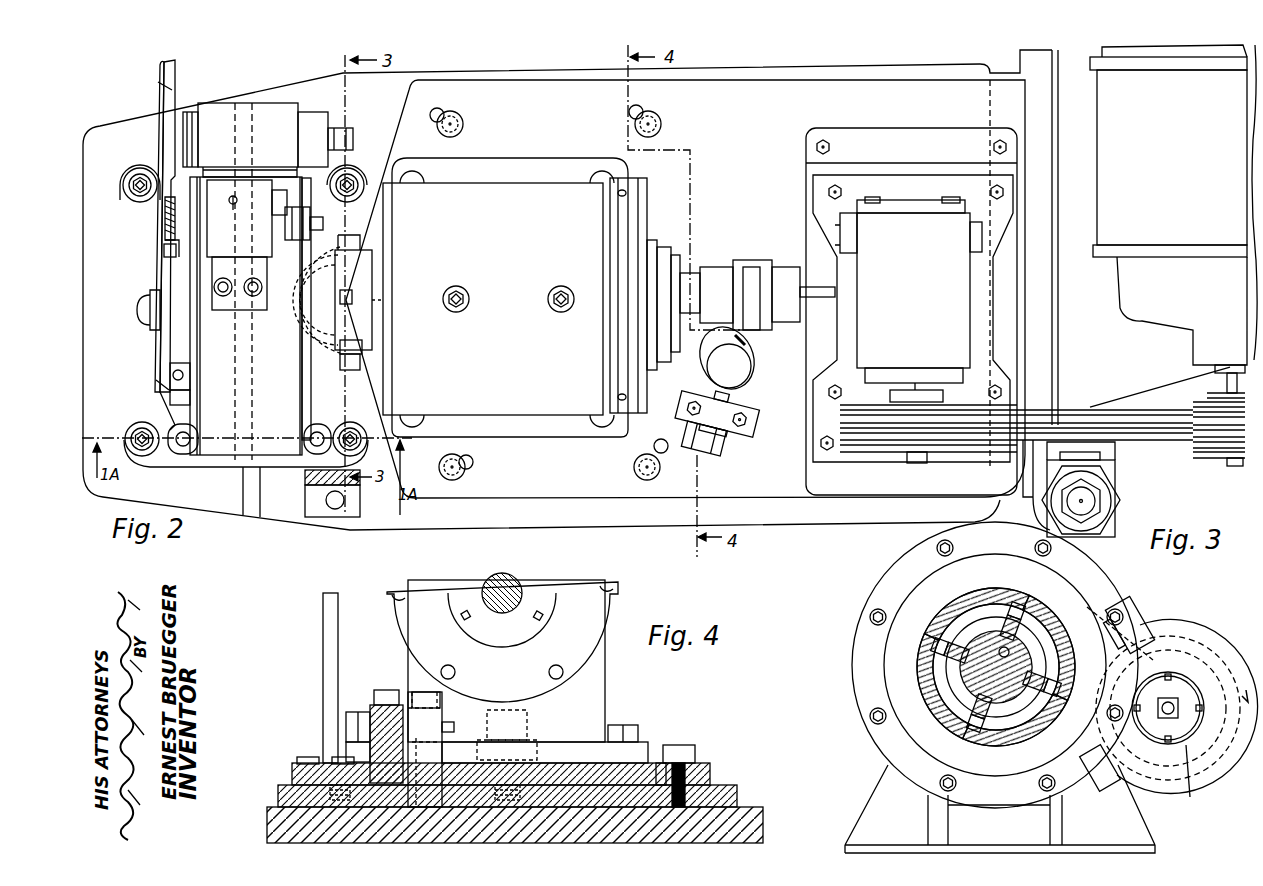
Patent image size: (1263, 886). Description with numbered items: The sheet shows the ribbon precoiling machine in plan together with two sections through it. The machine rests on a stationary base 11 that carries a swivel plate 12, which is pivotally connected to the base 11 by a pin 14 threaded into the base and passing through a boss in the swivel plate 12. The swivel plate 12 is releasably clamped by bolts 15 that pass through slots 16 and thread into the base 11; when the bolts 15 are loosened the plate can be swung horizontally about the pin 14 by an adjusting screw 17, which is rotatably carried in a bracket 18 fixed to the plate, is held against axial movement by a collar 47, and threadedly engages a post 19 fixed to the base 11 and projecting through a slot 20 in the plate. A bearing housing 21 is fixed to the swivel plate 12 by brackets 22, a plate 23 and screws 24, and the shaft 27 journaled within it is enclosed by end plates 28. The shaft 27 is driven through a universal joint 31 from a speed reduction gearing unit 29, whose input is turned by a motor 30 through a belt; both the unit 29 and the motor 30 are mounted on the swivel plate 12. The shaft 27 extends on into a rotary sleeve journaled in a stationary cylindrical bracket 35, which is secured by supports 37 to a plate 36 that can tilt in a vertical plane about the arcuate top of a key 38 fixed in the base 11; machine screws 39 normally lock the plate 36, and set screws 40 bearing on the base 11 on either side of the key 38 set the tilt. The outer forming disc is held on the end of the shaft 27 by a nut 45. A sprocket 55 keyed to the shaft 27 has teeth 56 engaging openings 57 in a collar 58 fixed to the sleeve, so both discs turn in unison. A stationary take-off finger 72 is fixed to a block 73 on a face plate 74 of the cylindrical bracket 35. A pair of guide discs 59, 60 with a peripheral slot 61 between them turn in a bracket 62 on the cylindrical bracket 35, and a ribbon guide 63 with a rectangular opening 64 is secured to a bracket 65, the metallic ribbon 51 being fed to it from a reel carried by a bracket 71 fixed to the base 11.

In FIG. 2, the stationary base 11 is at (290, 500).
In FIG. 4, the stationary base 11 is at (740, 790).
In FIG. 2, the swivel plate 12 is at (550, 505).
In FIG. 4, the swivel plate 12 is at (710, 765).
In FIG. 2, the pin 14 is at (372, 323).
In FIG. 4, the pin 14 is at (515, 755).
In FIG. 2, the bolts 15 is at (464, 124).
In FIG. 4, the bolts 15 is at (318, 758).
In FIG. 2, the slots 16 is at (442, 114).
In FIG. 4, the slots 16 is at (660, 763).
In FIG. 2, the adjusting screw 17 is at (724, 448).
In FIG. 4, the adjusting screw 17 is at (350, 742).
In FIG. 2, the bracket 18 is at (757, 416).
In FIG. 4, the bracket 18 is at (358, 712).
In FIG. 2, the post 19 is at (740, 376).
In FIG. 4, the post 19 is at (443, 708).
In FIG. 2, the slot 20 is at (748, 354).
In FIG. 4, the slot 20 is at (462, 775).
In FIG. 2, the bearing housing 21 is at (515, 183).
In FIG. 4, the brackets 22 is at (605, 678).
In FIG. 2, the plate 23 is at (560, 160).
In FIG. 4, the plate 23 is at (632, 745).
In FIG. 4, the screws 24 is at (620, 725).
In FIG. 2, the shaft 27 is at (700, 270).
In FIG. 2, the end plates 28 is at (640, 213).
In FIG. 4, the end plates 28 is at (608, 610).
In FIG. 2, the speed reduction gearing unit 29 is at (911, 311).
In FIG. 2, the motor 30 is at (1100, 203).
In FIG. 2, the universal joint 31 is at (745, 262).
In FIG. 2, the stationary cylindrical bracket 35 is at (228, 447).
In FIG. 3, the stationary cylindrical bracket 35 is at (875, 592).
In FIG. 2, the plate 36 is at (205, 460).
In FIG. 3, the supports 37 is at (1133, 812).
In FIG. 2, the key 38 is at (255, 488).
In FIG. 2, the machine screws 39 is at (172, 458).
In FIG. 2, the set screws 40 is at (138, 172).
In FIG. 2, the nut 45 is at (140, 330).
In FIG. 2, the collar 47 is at (752, 396).
In FIG. 4, the collar 47 is at (360, 690).
In FIG. 2, the metallic ribbon 51 is at (165, 220).
In FIG. 3, the metallic ribbon 51 is at (1115, 455).
In FIG. 2, the sprocket 55 is at (365, 257).
In FIG. 3, the sprocket 55 is at (1020, 625).
In FIG. 2, the teeth 56 is at (352, 297).
In FIG. 3, the teeth 56 is at (1040, 635).
In FIG. 2, the openings 57 is at (362, 355).
In FIG. 3, the openings 57 is at (1050, 648).
In FIG. 2, the collar 58 is at (344, 372).
In FIG. 3, the collar 58 is at (1060, 672).
In FIG. 2, the guide disc 59 is at (158, 92).
In FIG. 2, the guide disc 60 is at (176, 80).
In FIG. 3, the guide disc 60 is at (1195, 648).
In FIG. 2, the peripheral slot 61 is at (158, 70).
In FIG. 2, the bracket 62 is at (228, 103).
In FIG. 3, the bracket 62 is at (1190, 792).
In FIG. 2, the ribbon guide 63 is at (164, 253).
In FIG. 3, the ribbon guide 63 is at (1115, 474).
In FIG. 2, the opening 64 is at (165, 244).
In FIG. 2, the bracket 65 is at (280, 262).
In FIG. 3, the bracket 65 is at (1118, 505).
In FIG. 2, the bracket 71 is at (360, 498).
In FIG. 4, the bracket 71 is at (323, 623).
In FIG. 2, the take-off finger 72 is at (170, 373).
In FIG. 2, the block 73 is at (190, 385).
In FIG. 2, the face plate 74 is at (196, 356).